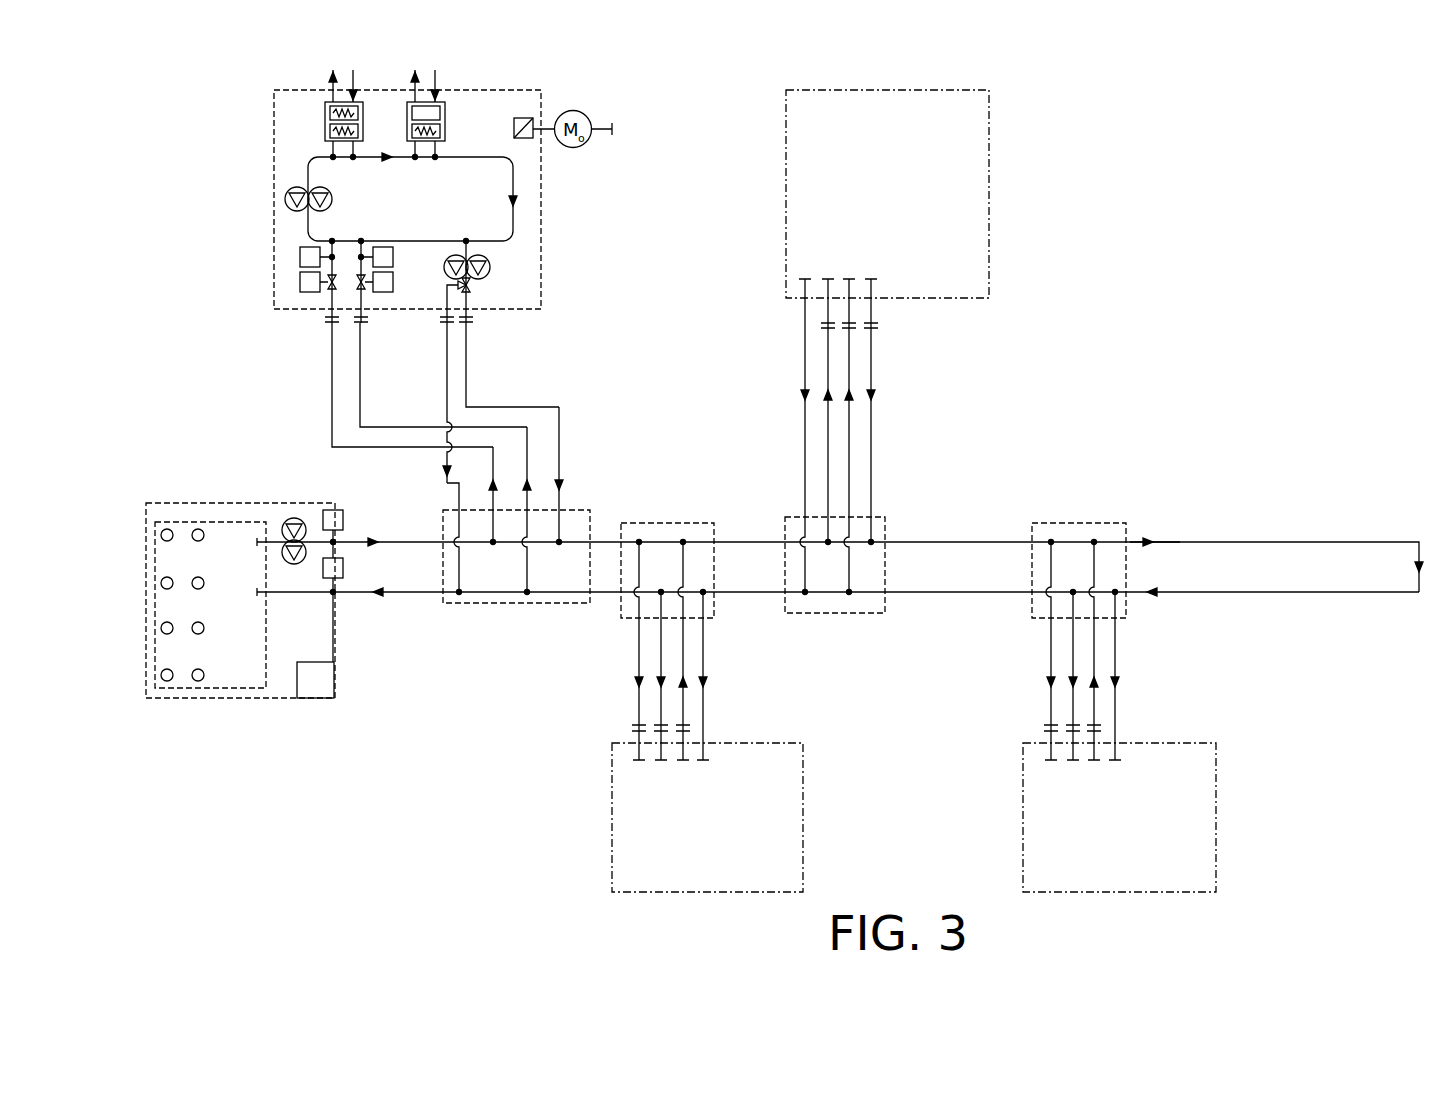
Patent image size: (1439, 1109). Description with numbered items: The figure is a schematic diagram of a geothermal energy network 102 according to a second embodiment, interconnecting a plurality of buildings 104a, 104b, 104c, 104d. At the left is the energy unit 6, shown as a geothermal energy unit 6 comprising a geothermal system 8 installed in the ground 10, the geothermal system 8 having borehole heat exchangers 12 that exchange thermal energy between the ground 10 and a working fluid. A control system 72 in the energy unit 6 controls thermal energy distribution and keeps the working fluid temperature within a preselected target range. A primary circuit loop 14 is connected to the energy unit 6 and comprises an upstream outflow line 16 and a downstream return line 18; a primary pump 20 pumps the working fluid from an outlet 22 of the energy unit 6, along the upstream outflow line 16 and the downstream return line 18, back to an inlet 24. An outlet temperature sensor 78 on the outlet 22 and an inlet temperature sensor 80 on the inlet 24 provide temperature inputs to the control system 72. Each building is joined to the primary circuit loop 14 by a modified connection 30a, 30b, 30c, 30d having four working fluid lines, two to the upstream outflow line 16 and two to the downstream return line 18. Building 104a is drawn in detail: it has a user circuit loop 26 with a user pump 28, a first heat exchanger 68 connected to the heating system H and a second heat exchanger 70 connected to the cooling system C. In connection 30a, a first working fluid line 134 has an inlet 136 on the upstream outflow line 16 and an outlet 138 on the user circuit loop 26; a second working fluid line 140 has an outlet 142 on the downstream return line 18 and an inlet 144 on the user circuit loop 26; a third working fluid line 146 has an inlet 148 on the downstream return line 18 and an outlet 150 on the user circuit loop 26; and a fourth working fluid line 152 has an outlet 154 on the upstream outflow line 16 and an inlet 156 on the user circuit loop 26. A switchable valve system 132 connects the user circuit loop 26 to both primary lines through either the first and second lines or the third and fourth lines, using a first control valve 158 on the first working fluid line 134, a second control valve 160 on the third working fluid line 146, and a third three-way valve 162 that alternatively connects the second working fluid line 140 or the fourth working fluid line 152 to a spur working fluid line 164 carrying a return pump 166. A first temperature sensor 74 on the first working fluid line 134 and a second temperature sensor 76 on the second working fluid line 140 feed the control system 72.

The energy unit 6 is at (273, 699).
The geothermal system 8 is at (168, 689).
The ground 10 is at (227, 725).
The borehole heat exchanger 12 is at (167, 528).
The primary circuit loop 14 is at (1227, 541).
The upstream outflow line 16 is at (1172, 541).
The downstream return line 18 is at (1266, 593).
The primary pump 20 is at (294, 517).
The outlet 22 is at (336, 545).
The inlet 24 is at (336, 594).
The user circuit loop 26 is at (308, 165).
The user pump 28 is at (285, 199).
The connection 30a is at (584, 440).
The connection 30b is at (714, 686).
The connection 30c is at (896, 430).
The connection 30d is at (1132, 686).
The first heat exchanger 68 is at (324, 121).
The second heat exchanger 70 is at (446, 121).
The control system 72 is at (317, 695).
The first temperature sensor 74 is at (300, 257).
The second temperature sensor 76 is at (393, 257).
The outlet temperature sensor 78 is at (343, 520).
The inlet temperature sensor 80 is at (322, 568).
The geothermal energy network 102 is at (499, 768).
The building 104a is at (541, 205).
The building 104b is at (803, 825).
The building 104c is at (989, 228).
The building 104d is at (1216, 825).
The switchable valve system 132 is at (276, 398).
The first working fluid line 134 is at (332, 432).
The inlet 136 is at (497, 518).
The outlet 138 is at (336, 242).
The second working fluid line 140 is at (447, 368).
The outlet 142 is at (459, 594).
The inlet 144 is at (440, 321).
The third working fluid line 146 is at (362, 400).
The inlet 148 is at (527, 594).
The outlet 150 is at (363, 242).
The fourth working fluid line 152 is at (466, 390).
The outlet 154 is at (562, 498).
The inlet 156 is at (470, 322).
The first control valve 158 is at (330, 294).
The second control valve 160 is at (364, 294).
The third three-way valve 162 is at (472, 288).
The spur working fluid line 164 is at (466, 241).
The return pump 166 is at (490, 268).